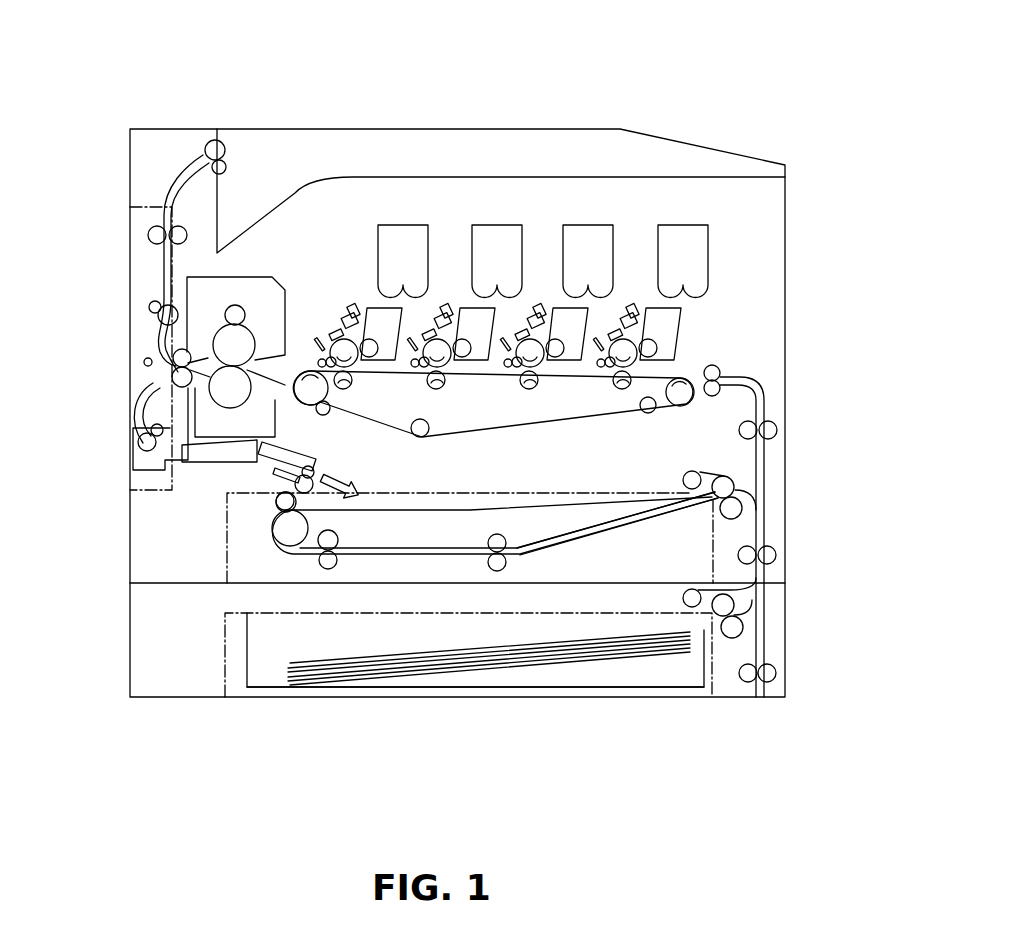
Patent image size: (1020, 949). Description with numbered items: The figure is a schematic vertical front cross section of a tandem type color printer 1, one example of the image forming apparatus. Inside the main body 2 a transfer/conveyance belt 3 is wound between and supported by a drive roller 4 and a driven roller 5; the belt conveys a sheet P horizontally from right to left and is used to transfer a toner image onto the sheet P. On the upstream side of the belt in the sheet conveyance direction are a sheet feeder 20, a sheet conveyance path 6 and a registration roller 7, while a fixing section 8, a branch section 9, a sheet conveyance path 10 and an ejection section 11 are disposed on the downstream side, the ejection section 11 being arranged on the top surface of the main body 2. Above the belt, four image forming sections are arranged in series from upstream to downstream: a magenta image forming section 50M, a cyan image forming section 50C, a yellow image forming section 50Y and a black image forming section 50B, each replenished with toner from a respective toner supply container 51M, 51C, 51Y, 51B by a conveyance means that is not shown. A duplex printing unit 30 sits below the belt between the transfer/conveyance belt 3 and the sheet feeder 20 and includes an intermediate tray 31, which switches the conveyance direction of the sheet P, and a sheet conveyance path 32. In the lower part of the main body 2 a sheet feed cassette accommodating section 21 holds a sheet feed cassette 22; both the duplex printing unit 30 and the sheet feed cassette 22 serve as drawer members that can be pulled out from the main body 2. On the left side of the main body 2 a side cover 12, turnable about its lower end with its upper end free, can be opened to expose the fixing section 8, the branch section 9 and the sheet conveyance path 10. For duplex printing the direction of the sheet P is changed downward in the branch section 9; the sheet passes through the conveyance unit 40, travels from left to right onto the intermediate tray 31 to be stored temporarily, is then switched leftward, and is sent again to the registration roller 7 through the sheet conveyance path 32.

The printer 1 is at (453, 66).
The main body 2 is at (604, 120).
The transfer/conveyance belt 3 is at (530, 424).
The drive roller 4 is at (328, 394).
The driven roller 5 is at (688, 407).
The sheet conveyance path 6 is at (752, 488).
The registration roller 7 is at (718, 364).
The fixing section 8 is at (268, 276).
The branch section 9 is at (150, 352).
The sheet conveyance path 10 is at (152, 262).
The ejection section 11 is at (255, 150).
The side cover 12 is at (148, 205).
The sheet feeder 20 is at (439, 716).
The sheet feed cassette accommodating section 21 is at (206, 655).
The sheet feed cassette 22 is at (225, 676).
The duplex printing unit 30 is at (225, 555).
The intermediate tray 31 is at (456, 498).
The sheet conveyance path 32 is at (432, 550).
The conveyance unit 40 is at (194, 490).
The black image forming section 50B is at (352, 300).
The yellow image forming section 50Y is at (457, 292).
The cyan image forming section 50C is at (549, 292).
The magenta image forming section 50M is at (642, 292).
The toner supply container 51B is at (377, 243).
The toner supply container 51Y is at (505, 225).
The toner supply container 51C is at (600, 225).
The toner supply container 51M is at (697, 225).
The sheet P is at (606, 657).